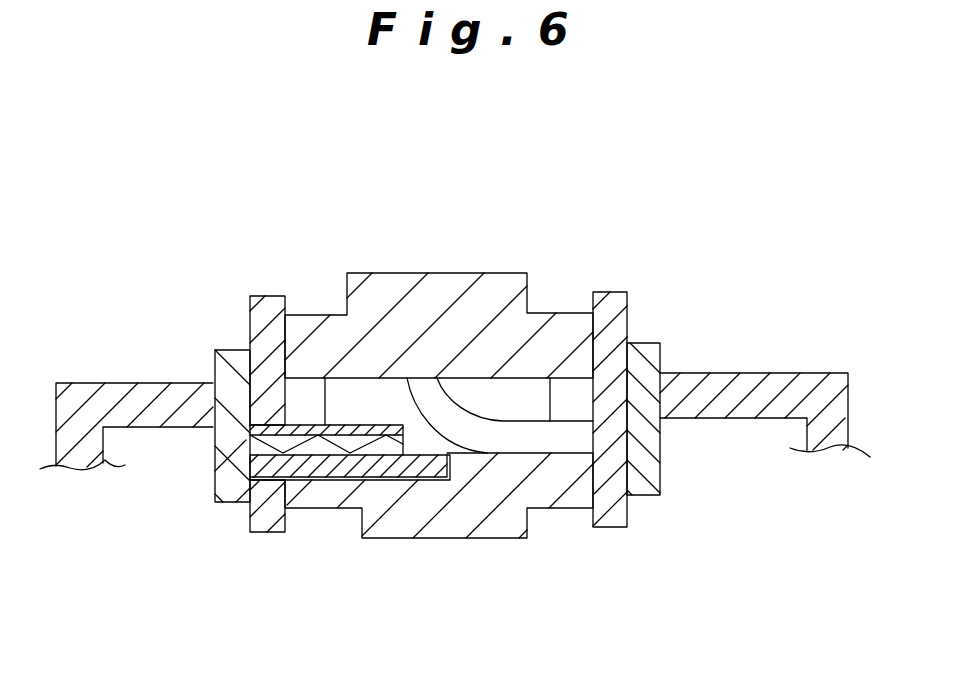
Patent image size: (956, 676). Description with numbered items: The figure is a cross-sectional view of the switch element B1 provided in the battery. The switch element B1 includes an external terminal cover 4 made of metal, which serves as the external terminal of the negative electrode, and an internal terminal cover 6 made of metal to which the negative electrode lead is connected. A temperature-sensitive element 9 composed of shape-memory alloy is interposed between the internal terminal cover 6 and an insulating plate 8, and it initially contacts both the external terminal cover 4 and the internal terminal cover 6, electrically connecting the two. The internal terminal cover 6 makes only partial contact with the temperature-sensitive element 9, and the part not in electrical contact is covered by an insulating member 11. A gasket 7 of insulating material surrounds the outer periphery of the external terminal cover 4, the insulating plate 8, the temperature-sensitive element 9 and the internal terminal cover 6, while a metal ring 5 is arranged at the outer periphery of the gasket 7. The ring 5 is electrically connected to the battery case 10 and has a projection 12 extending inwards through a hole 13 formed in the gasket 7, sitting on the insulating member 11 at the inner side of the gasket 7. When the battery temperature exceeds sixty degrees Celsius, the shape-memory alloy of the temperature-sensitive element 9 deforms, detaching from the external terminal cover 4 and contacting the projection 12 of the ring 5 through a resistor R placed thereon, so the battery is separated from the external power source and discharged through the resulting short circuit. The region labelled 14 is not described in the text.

The external terminal cover 4 is at (548, 335).
The metal ring 5 is at (660, 343).
The internal terminal cover 6 is at (447, 527).
The gasket 7 is at (625, 293).
The insulating plate 8 is at (572, 401).
The temperature-sensitive element 9 is at (565, 441).
The battery case 10 is at (772, 395).
The insulating member 11 is at (395, 470).
The projection 12 is at (325, 427).
The hole 13 is at (262, 453).
The recess 14 is at (488, 388).
The resistor R is at (357, 423).
The switch element B1 is at (640, 197).